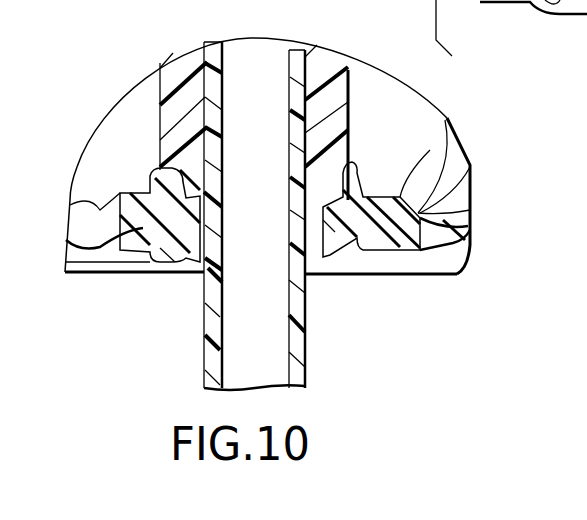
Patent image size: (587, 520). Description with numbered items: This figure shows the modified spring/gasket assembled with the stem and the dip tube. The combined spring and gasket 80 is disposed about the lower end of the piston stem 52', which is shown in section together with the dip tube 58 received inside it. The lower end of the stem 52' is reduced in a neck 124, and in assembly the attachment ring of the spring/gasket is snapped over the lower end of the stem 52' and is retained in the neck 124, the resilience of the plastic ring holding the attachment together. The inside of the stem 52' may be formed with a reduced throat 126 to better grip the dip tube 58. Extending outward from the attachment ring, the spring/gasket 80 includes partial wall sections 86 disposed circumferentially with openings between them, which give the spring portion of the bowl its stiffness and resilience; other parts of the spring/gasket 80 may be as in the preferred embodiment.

The piston stem 52' is at (278, 110).
The dip tube 58 is at (298, 340).
The combined spring and gasket 80 is at (93, 252).
The partial wall sections 86 is at (445, 232).
The neck 124 is at (167, 167).
The reduced throat 126 is at (223, 191).